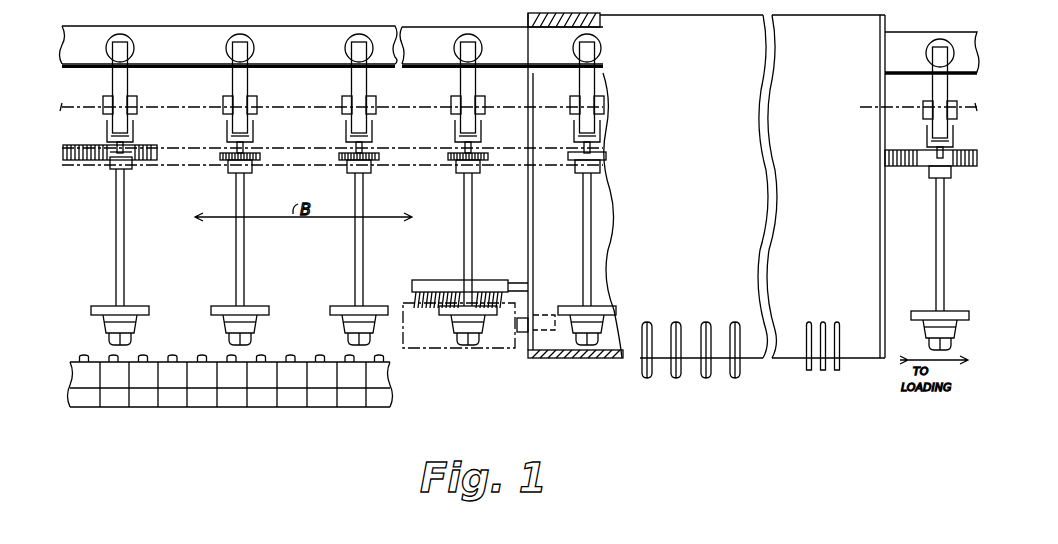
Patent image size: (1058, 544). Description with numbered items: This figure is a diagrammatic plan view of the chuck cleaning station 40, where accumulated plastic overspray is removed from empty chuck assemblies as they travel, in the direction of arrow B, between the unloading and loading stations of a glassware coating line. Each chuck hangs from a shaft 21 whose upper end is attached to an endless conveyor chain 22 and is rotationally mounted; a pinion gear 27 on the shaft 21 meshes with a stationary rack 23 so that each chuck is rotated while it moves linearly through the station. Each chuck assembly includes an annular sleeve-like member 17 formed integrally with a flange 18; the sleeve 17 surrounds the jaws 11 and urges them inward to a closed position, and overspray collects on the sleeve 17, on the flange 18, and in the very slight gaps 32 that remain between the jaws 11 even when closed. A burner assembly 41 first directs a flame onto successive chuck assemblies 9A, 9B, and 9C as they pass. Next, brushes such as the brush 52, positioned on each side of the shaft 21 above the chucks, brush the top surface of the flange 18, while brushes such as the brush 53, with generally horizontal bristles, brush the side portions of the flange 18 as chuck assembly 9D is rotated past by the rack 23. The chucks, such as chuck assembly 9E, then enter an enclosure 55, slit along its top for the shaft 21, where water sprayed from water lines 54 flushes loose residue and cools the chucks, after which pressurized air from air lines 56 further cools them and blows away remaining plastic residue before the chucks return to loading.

The endless conveyor chain 22 is at (166, 104).
The stationary rack 23 is at (95, 168).
The pinion gear 27 is at (122, 167).
The shaft 21 is at (116, 238).
The flange 18 is at (136, 303).
The annular sleeve-like member 17 is at (128, 326).
The jaws 11 is at (130, 331).
The gaps 32 is at (109, 338).
The chuck assembly 9A is at (124, 307).
The chuck assembly 9B is at (283, 288).
The chuck assembly 9C is at (327, 334).
The chuck assembly 9D is at (452, 341).
The fifth station 9E is at (574, 351).
The brush 52 is at (493, 283).
The brush 53 is at (497, 350).
The water lines 54 is at (745, 399).
The enclosure 55 is at (706, 185).
The air lines 56 is at (845, 391).
The burner assembly 41 is at (168, 411).
The chuck cleaning station 40 is at (335, 458).